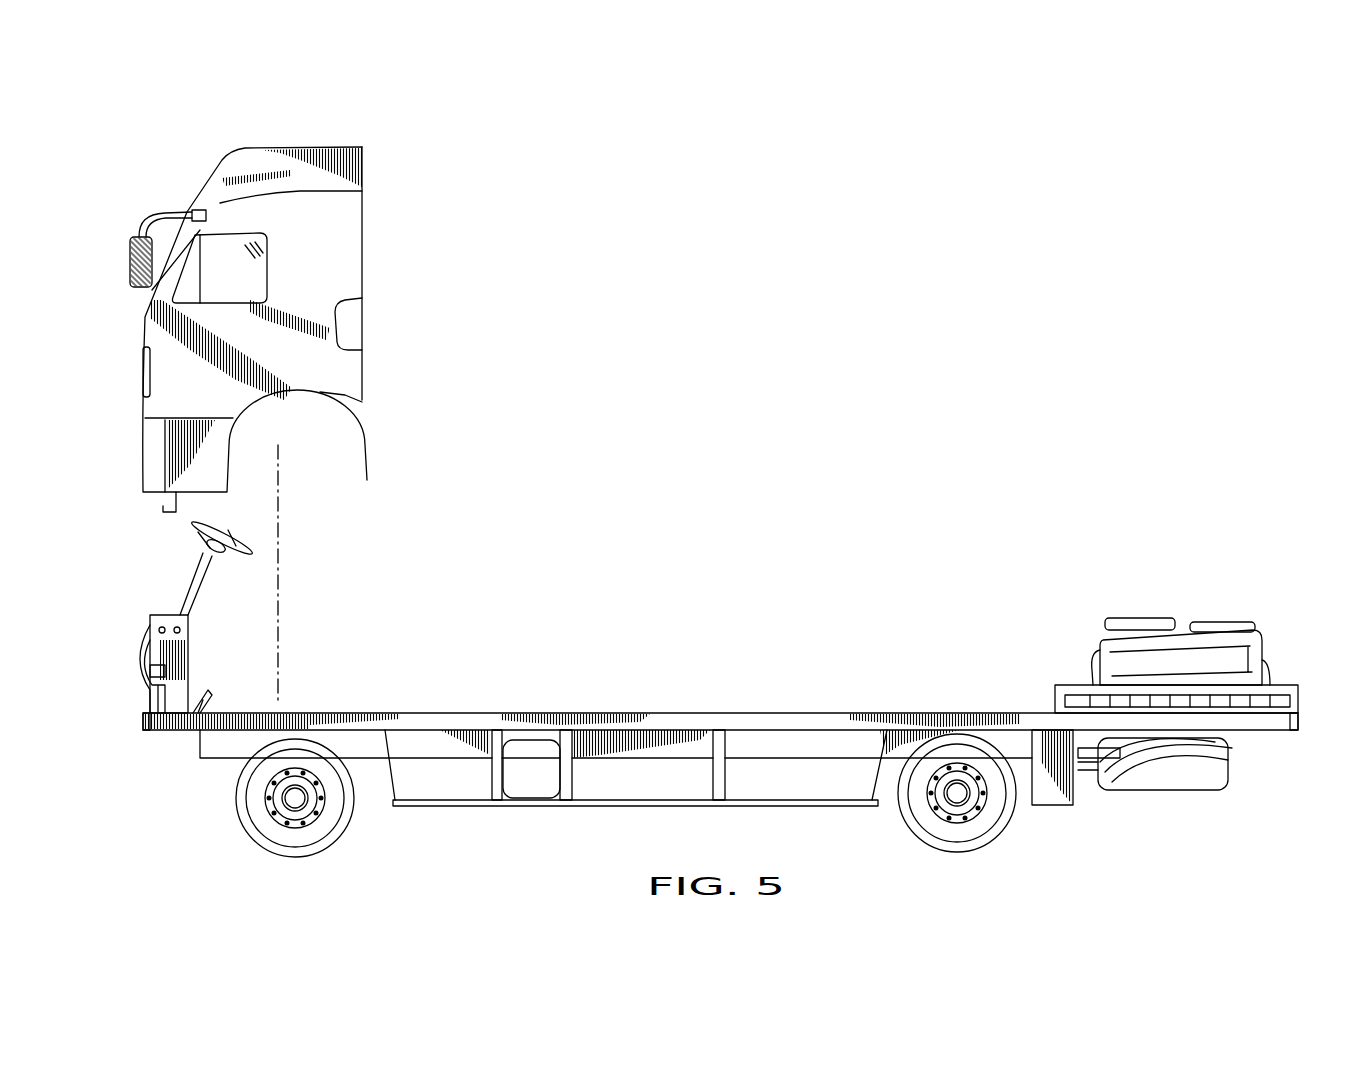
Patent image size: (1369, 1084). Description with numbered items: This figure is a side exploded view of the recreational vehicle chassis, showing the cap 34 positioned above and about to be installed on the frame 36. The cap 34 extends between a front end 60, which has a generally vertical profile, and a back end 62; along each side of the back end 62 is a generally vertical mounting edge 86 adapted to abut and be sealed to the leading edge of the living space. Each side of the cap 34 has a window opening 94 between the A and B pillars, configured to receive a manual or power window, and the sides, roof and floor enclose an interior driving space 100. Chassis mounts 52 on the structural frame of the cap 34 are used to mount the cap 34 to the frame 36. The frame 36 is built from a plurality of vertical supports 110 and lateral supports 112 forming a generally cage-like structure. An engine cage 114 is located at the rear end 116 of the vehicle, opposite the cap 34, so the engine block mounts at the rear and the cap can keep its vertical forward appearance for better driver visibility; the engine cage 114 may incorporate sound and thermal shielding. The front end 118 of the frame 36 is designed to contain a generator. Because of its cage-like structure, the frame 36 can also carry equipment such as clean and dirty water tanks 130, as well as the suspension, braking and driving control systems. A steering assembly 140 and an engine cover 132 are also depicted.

The cap 34 is at (345, 216).
The window opening 94 is at (267, 275).
The mounting edge 86 is at (362, 308).
The front end 60 is at (130, 370).
The back end 62 is at (392, 376).
The chassis mounts 52 is at (160, 510).
The steering assembly 140 is at (192, 585).
The interior driving space 100 is at (352, 572).
The lateral supports 112 is at (678, 722).
The front end of the frame 118 is at (143, 718).
The rear end 116 is at (1300, 722).
The vertical supports 110 is at (417, 760).
The clean and dirty water tanks 130 is at (528, 745).
The frame 36 is at (1260, 722).
The engine cover 132 is at (1187, 648).
The engine cage 114 is at (1283, 690).